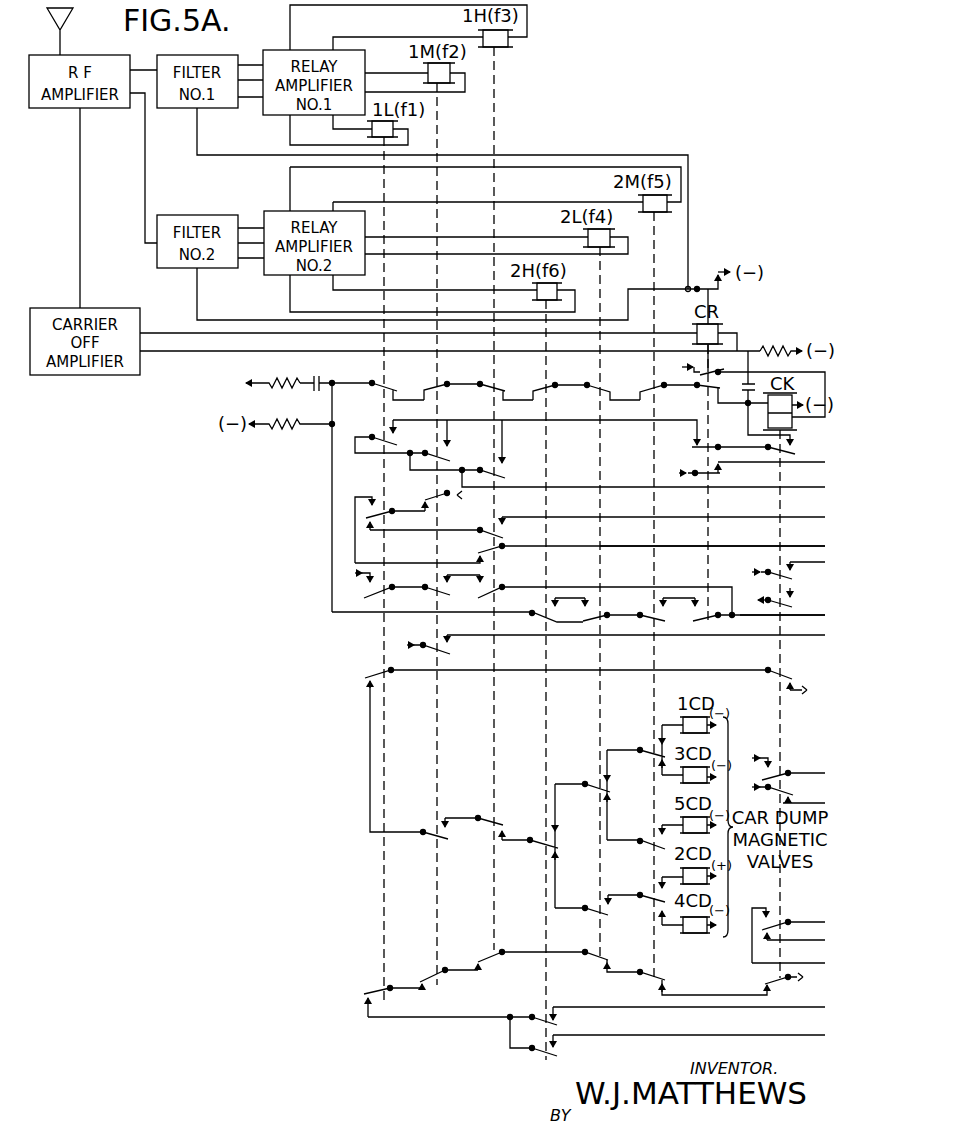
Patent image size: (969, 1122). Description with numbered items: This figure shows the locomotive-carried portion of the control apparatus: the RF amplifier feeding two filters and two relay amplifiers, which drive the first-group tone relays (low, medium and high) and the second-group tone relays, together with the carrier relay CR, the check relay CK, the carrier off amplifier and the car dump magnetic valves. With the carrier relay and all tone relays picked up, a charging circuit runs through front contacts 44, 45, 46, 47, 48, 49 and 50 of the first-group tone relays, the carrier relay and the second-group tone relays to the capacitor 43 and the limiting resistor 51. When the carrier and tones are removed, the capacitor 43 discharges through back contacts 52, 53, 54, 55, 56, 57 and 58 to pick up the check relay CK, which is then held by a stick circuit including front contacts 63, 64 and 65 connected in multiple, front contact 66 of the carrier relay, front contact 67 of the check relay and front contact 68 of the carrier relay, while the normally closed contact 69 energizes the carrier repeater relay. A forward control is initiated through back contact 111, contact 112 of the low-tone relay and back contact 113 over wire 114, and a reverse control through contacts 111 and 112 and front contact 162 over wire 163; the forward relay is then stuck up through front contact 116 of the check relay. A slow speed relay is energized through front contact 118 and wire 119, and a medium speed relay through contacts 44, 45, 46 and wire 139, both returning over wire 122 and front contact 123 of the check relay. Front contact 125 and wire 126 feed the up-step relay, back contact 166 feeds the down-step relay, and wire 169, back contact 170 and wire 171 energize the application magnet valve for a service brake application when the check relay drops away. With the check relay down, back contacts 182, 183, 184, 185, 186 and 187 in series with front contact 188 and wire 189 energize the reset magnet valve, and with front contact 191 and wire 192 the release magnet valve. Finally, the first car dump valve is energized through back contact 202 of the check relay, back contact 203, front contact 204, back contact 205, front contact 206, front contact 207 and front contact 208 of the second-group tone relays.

The limiting resistor 51 is at (256, 374).
The capacitor 43 is at (320, 381).
The back contact of relay 1L 52 is at (376, 389).
The back contact of relay 1M 53 is at (441, 389).
The back contact of relay 1H 54 is at (490, 385).
The back contact of relay 2H 55 is at (548, 390).
The back contact of relay 2L 56 is at (603, 388).
The back contact of relay 2M 57 is at (653, 387).
The back contact of relay CR 58 is at (700, 389).
The front contact of relay CR 68 is at (708, 377).
The front contact of relay CR 66 is at (708, 447).
The front contact of relay CK 67 is at (794, 446).
The normally closed contact of relay CR 69 is at (722, 474).
The front contact of relay 1L 65 is at (378, 442).
The front contact of relay 1M 64 is at (438, 457).
The front contact of relay 1H 63 is at (495, 475).
The contact of relay 1L 112 is at (378, 512).
The back contact of relay 1M 111 is at (458, 504).
The front contact of relay 1H 162 is at (483, 535).
The back contact of relay 1H 113 is at (501, 546).
The wire 163 is at (816, 518).
The wire 114 is at (821, 551).
The front contact of relay CK 116 is at (790, 559).
The wire 122 is at (779, 575).
The front contact of relay CK 123 is at (779, 602).
The front contact of relay 1L 44 is at (368, 592).
The front contact of relay 1M 45 is at (420, 592).
The front contact of relay 1H 46 is at (540, 590).
The front contact of relay 2H 50 is at (538, 621).
The front contact of relay 2L 49 is at (611, 627).
The front contact of relay 2M 48 is at (652, 614).
The front contact of relay CR 47 is at (705, 619).
The wire 139 is at (785, 618).
The wire 119 is at (815, 638).
The front contact of relay 1M 118 is at (442, 650).
The back contact of relay 1L 203 is at (383, 679).
The back contact of relay CK 202 is at (772, 677).
The front contact of relay 1M 204 is at (419, 843).
The back contact of relay 1H 205 is at (490, 820).
The front contact of relay 2H 206 is at (545, 849).
The front contact of relay 2L 207 is at (598, 788).
The front contact of relay 2M 208 is at (650, 752).
The wire 126 is at (820, 771).
The front contact of relay CK 125 is at (772, 763).
The back contact of relay CK 166 is at (778, 788).
The back contact of relay CK 170 is at (773, 915).
The wire 169 is at (812, 921).
The wire 171 is at (815, 942).
The back contact of relay CK 182 is at (763, 985).
The back contact of relay 2M 183 is at (658, 975).
The back contact of relay 2L 184 is at (555, 967).
The back contact of relay 1H 185 is at (480, 956).
The back contact of relay 1M 186 is at (432, 981).
The back contact of relay 1L 187 is at (368, 991).
The front contact of relay 2H 191 is at (536, 1015).
The wire 192 is at (820, 1010).
The front contact of relay 2H 188 is at (530, 1053).
The wire 189 is at (820, 1038).